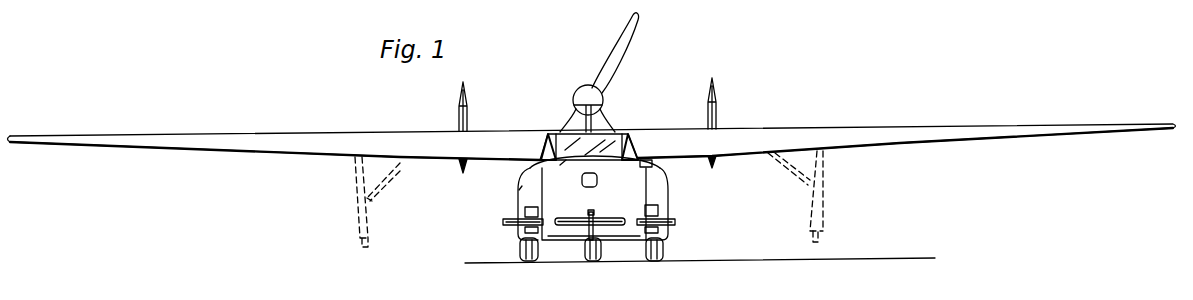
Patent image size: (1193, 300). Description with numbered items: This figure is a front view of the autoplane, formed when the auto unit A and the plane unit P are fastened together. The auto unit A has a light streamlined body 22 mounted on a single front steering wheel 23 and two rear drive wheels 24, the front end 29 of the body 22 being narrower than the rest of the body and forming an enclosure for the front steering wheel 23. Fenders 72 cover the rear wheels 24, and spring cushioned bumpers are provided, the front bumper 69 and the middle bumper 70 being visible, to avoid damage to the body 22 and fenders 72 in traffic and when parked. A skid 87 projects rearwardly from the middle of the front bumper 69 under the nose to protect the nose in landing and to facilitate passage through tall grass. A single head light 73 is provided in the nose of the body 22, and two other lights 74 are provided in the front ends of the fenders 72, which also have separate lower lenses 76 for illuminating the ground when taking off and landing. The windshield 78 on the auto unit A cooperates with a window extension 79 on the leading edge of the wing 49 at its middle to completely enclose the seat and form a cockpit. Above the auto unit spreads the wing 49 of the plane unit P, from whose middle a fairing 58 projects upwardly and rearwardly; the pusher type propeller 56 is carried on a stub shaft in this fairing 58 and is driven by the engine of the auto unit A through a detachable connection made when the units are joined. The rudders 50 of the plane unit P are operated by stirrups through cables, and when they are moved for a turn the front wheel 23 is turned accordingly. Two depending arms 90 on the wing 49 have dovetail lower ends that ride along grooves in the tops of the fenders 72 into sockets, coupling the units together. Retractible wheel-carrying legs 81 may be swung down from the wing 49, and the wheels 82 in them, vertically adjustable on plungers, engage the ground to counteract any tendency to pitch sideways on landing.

The wing 49 is at (855, 132).
The plane unit P is at (760, 126).
The rudders 50 is at (468, 93).
The pusher type propeller 56 is at (620, 53).
The fairing 58 is at (598, 120).
The window extension 79 is at (618, 131).
The auto unit A is at (678, 195).
The body 22 is at (594, 213).
The head light 73 is at (598, 180).
The windshield 78 is at (575, 150).
The fenders 72 is at (521, 188).
The depending arms 90 is at (652, 166).
The lights 74 is at (523, 212).
The middle bumper 70 is at (665, 215).
The lower lenses 76 is at (522, 233).
The front bumper 69 is at (582, 222).
The skid 87 is at (588, 240).
The front end 29 is at (567, 232).
The front steering wheel 23 is at (600, 252).
The rear drive wheels 24 is at (663, 250).
The retractible wheel-carrying legs 81 is at (824, 197).
The wheels 82 is at (819, 242).